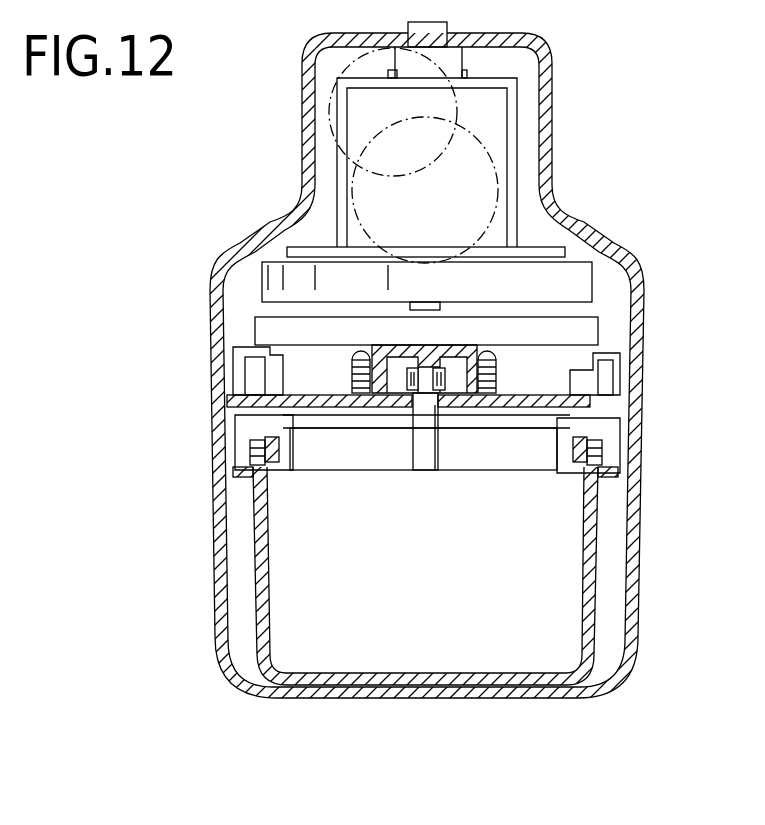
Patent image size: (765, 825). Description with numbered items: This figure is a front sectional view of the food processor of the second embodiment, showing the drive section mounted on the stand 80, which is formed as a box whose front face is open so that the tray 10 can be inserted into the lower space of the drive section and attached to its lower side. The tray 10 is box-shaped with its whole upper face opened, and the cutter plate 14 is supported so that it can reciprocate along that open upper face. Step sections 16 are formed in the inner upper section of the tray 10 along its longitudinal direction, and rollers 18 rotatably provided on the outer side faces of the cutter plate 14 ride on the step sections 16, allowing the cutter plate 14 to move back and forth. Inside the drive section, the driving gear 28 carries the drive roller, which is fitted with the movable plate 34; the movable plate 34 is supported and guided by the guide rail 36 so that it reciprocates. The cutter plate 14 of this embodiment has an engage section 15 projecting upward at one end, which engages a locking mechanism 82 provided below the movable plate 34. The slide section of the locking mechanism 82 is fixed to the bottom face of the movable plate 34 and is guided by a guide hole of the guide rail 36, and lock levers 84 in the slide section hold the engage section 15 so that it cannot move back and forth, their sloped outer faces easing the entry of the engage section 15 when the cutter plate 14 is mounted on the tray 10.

The tray 10 is at (482, 680).
The cutter plate 14 is at (527, 462).
The engage section 15 is at (425, 412).
The step sections 16 is at (593, 468).
The rollers 18 is at (245, 455).
The driving gear 28 is at (577, 275).
The movable plate 34 is at (583, 332).
The guide rail 36 is at (493, 372).
The stand 80 is at (625, 573).
The locking mechanism 82 is at (520, 393).
The lock levers 84 is at (353, 373).